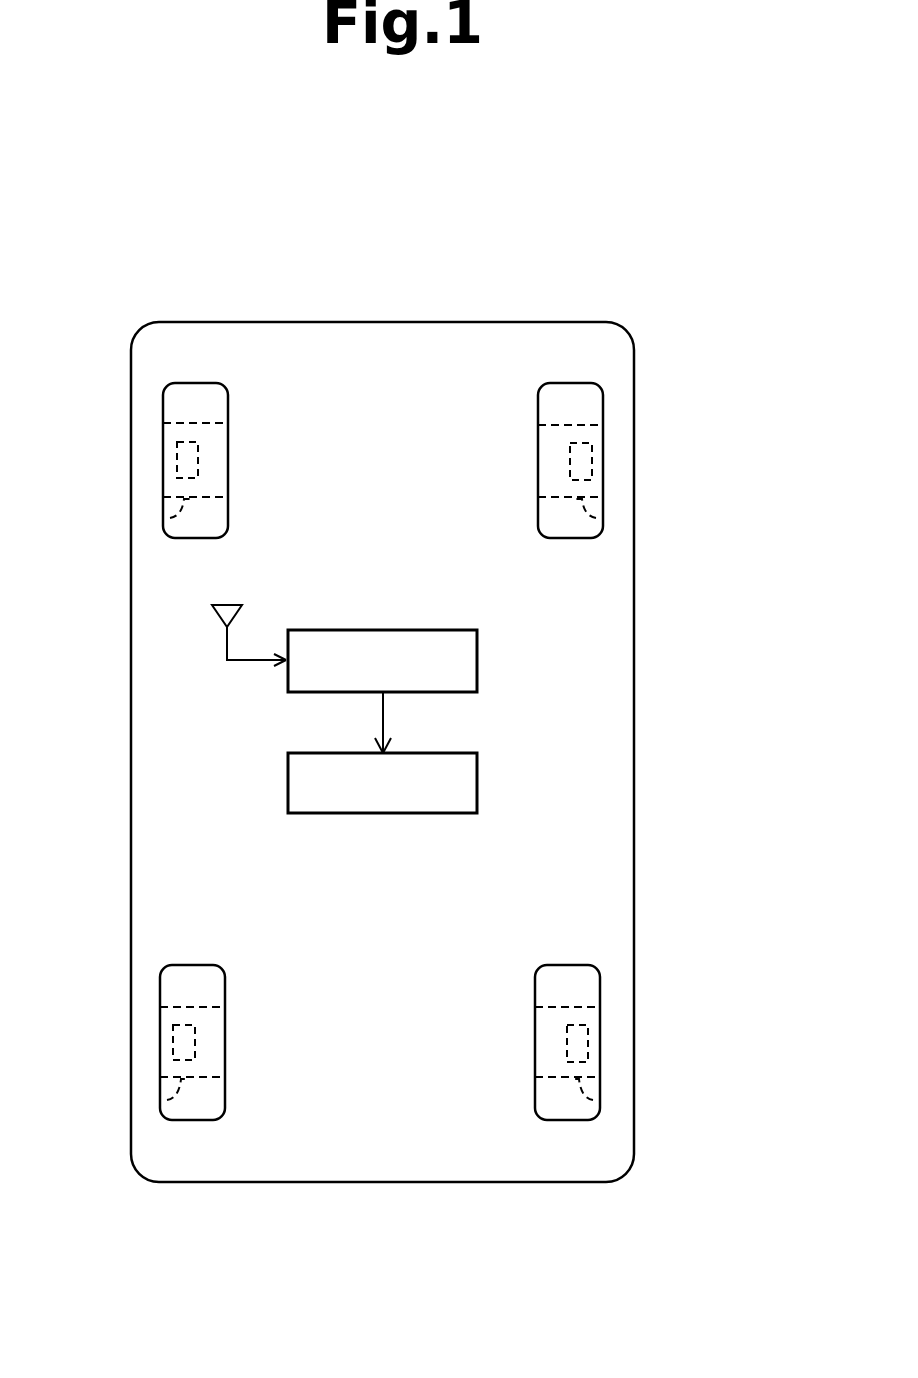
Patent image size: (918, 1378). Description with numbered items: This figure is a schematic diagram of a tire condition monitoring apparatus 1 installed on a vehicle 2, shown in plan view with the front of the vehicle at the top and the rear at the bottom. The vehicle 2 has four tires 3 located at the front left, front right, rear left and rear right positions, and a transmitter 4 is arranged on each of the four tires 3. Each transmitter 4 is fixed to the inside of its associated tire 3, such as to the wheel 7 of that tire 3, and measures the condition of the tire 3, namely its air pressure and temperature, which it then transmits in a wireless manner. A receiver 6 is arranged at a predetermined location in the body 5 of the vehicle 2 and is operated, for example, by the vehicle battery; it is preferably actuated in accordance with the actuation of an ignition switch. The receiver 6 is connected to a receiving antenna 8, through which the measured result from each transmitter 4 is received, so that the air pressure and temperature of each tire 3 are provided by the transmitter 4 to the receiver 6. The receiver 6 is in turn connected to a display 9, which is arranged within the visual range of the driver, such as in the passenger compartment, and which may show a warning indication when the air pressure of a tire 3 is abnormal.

The tire condition monitoring apparatus 1 is at (693, 262).
The vehicle 2 is at (292, 322).
The tire 3 is at (177, 405).
The transmitter 4 is at (177, 463).
The body 5 is at (522, 322).
The receiver 6 is at (478, 661).
The wheel 7 is at (165, 517).
The receiving antenna 8 is at (217, 616).
The display 9 is at (478, 783).